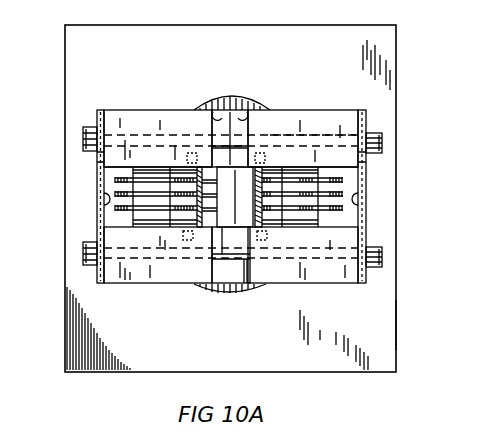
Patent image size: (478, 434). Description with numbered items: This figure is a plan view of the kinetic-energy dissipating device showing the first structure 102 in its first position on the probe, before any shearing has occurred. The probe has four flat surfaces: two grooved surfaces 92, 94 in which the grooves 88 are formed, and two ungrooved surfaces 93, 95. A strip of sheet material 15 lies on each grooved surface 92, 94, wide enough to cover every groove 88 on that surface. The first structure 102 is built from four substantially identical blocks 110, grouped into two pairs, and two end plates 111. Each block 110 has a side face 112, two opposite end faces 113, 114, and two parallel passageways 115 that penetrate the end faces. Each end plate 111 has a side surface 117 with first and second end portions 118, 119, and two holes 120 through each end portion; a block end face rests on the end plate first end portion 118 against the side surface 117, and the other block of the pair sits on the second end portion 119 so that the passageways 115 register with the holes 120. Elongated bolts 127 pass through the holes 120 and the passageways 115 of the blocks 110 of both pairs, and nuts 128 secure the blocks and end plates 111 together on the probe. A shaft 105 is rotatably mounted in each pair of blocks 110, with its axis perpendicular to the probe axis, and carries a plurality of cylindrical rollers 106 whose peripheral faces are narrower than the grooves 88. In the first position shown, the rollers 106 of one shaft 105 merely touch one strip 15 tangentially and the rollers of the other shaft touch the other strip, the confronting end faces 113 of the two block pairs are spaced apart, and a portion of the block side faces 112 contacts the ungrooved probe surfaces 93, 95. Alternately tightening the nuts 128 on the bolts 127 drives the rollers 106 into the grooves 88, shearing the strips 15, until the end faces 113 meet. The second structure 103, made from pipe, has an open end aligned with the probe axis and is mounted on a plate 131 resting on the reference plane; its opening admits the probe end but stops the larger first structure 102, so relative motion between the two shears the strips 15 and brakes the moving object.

The first structure 102 is at (98, 322).
The end plate 111 is at (95, 110).
The block 110 is at (128, 107).
The shaft 105 is at (113, 218).
The cylindrical roller 106 is at (343, 213).
The probe surface 92 is at (197, 173).
The probe surface 94 is at (262, 172).
The strip of sheet material 15 is at (193, 218).
The probe surface 95 is at (231, 110).
The end face 113 is at (215, 113).
The probe surface 93 is at (225, 257).
The elongated bolt 127 is at (230, 262).
The groove 88 is at (257, 286).
The second structure 103 is at (195, 295).
The passageway 115 is at (335, 137).
The first end portion 118 is at (97, 120).
The second end portion 119 is at (97, 272).
The nut 128 is at (368, 134).
The hole 120 is at (372, 266).
The end face 114 is at (100, 157).
The side face 112 is at (110, 166).
The side surface 117 is at (103, 202).
The plate 131 is at (397, 326).